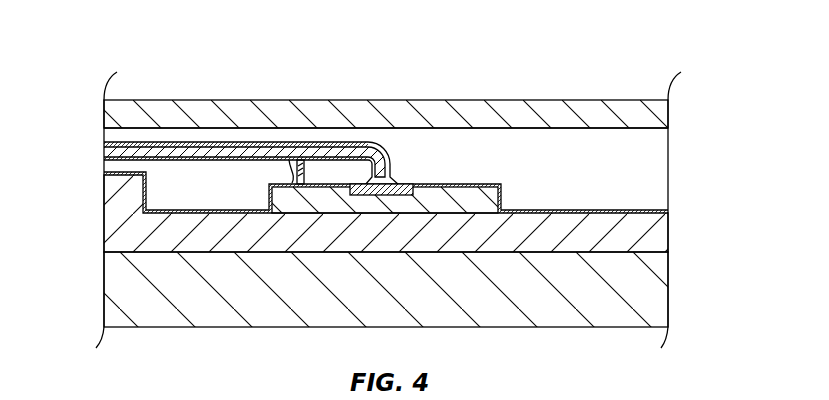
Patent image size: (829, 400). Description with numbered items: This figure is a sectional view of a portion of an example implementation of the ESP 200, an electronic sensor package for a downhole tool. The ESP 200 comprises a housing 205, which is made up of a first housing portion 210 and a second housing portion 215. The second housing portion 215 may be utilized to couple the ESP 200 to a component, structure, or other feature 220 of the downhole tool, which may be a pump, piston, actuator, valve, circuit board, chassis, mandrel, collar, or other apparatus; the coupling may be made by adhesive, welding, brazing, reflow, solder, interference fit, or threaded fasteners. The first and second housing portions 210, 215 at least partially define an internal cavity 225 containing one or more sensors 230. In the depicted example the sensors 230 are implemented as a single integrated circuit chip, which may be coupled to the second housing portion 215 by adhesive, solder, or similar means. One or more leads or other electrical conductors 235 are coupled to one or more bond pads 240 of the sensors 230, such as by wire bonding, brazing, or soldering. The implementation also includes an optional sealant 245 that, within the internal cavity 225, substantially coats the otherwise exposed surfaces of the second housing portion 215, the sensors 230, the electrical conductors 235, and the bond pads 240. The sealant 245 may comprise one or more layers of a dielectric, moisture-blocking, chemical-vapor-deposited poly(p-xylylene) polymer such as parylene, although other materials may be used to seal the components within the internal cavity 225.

The ESP 200 is at (132, 50).
The housing 205 is at (678, 100).
The first housing portion 210 is at (613, 108).
The second housing portion 215 is at (113, 223).
The feature 220 is at (218, 317).
The internal cavity 225 is at (644, 184).
The sensors 230 is at (484, 197).
The electrical conductors 235 is at (106, 156).
The bond pads 240 is at (407, 188).
The sealant 245 is at (106, 145).